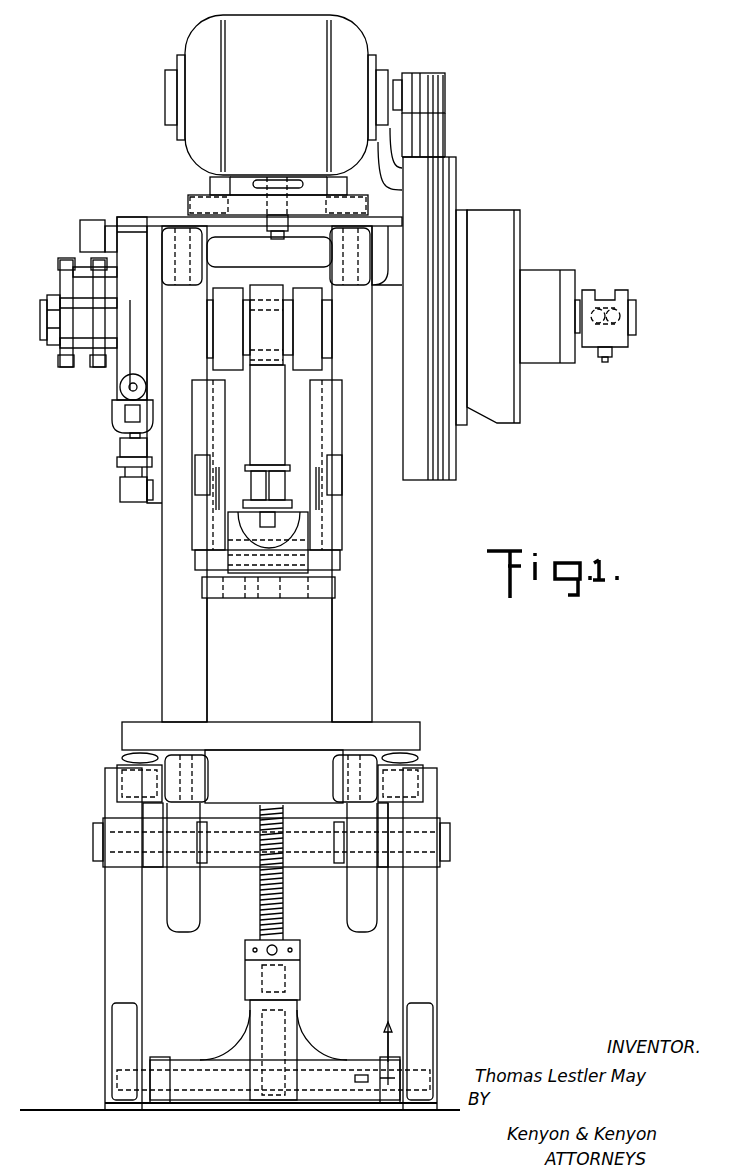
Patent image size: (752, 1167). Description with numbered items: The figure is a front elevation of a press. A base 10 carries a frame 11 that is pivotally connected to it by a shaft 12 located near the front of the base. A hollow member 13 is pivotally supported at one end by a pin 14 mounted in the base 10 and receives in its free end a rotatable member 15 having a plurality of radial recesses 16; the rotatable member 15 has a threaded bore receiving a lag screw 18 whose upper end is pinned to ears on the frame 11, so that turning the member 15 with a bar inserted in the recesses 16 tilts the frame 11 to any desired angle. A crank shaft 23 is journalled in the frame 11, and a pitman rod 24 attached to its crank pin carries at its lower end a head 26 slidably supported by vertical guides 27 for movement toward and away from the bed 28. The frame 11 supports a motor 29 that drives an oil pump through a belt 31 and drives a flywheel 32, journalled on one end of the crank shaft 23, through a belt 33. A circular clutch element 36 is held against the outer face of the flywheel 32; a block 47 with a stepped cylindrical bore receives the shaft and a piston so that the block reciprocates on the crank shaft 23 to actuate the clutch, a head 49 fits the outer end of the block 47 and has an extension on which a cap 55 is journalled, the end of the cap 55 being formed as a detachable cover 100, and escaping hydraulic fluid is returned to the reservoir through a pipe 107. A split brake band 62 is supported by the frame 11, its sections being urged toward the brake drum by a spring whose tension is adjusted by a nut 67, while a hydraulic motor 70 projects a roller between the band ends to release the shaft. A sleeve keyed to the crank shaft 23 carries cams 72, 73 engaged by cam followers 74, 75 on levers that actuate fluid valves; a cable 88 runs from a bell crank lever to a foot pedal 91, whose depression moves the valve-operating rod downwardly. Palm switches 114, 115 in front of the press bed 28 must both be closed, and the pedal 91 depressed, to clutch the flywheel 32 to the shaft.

The base 10 is at (440, 906).
The frame 11 is at (176, 627).
The shaft 12 is at (93, 840).
The hollow member 13 is at (300, 1016).
The pin 14 is at (307, 1092).
The rotatable member 15 is at (248, 946).
The radial recesses 16 is at (277, 950).
The lag screw 18 is at (258, 882).
The crank shaft 23 is at (310, 358).
The pitman rod 24 is at (266, 392).
The head 26 is at (233, 523).
The vertical guides 27 is at (200, 432).
The bed 28 is at (250, 722).
The motor 29 is at (354, 31).
The belt 31 is at (440, 125).
The flywheel 32 is at (456, 446).
The belt 33 is at (436, 137).
The circular clutch element 36 is at (470, 228).
The block 47 is at (541, 278).
The head 49 is at (570, 352).
The cap 55 is at (622, 292).
The split brake band 62 is at (136, 322).
The nut 67 is at (122, 387).
The hydraulic motor 70 is at (132, 488).
The cam 72 is at (50, 298).
The cam 73 is at (100, 362).
The cam follower 74 is at (65, 260).
The cam follower 75 is at (97, 258).
The cable 88 is at (385, 956).
The foot pedal 91 is at (370, 1084).
The detachable cover 100 is at (637, 316).
The pipe 107 is at (610, 358).
The palm switch 114 is at (130, 752).
The palm switch 115 is at (405, 752).